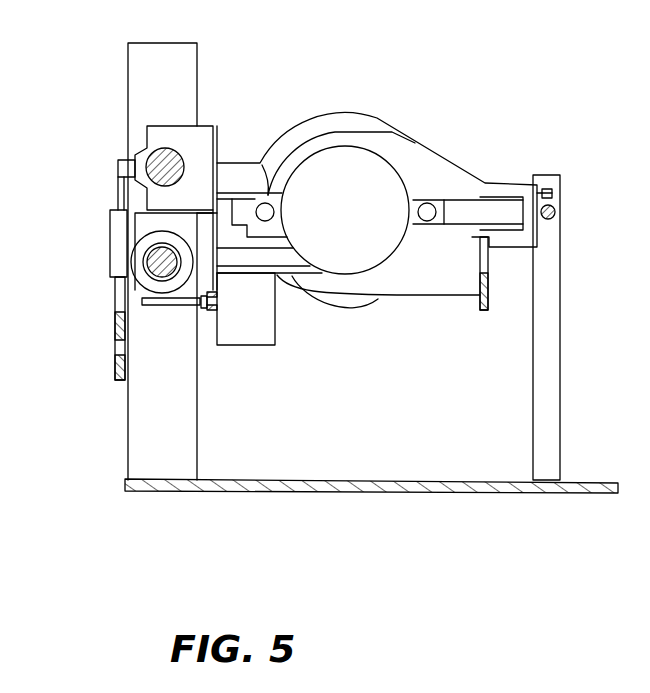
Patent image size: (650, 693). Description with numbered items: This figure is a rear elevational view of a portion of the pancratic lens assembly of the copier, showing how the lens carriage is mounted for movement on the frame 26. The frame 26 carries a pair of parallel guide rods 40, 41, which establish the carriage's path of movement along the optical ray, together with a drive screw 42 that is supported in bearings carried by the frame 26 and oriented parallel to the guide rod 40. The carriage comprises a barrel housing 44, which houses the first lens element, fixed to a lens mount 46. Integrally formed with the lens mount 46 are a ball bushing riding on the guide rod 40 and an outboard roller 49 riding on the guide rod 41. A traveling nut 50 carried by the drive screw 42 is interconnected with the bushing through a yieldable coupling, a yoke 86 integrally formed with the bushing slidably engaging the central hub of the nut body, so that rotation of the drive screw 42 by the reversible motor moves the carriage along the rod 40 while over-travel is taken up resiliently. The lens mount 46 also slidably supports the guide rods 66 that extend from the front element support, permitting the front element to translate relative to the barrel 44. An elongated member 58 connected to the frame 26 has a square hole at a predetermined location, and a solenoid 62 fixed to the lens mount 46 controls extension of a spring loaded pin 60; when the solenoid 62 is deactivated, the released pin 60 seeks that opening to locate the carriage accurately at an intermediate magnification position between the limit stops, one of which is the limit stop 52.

The frame 26 is at (150, 82).
The guide rod 40 is at (197, 134).
The guide rod 41 is at (556, 216).
The drive screw 42 is at (152, 259).
The barrel housing 44 is at (350, 167).
The lens mount 46 is at (430, 165).
The outboard roller 49 is at (554, 192).
The traveling nut 50 is at (135, 286).
The limit stop 52 is at (118, 236).
The elongated member 58 is at (115, 330).
The spring loaded pin 60 is at (187, 303).
The solenoid 62 is at (277, 325).
The guide rods 66 is at (258, 205).
The yoke 86 is at (145, 213).